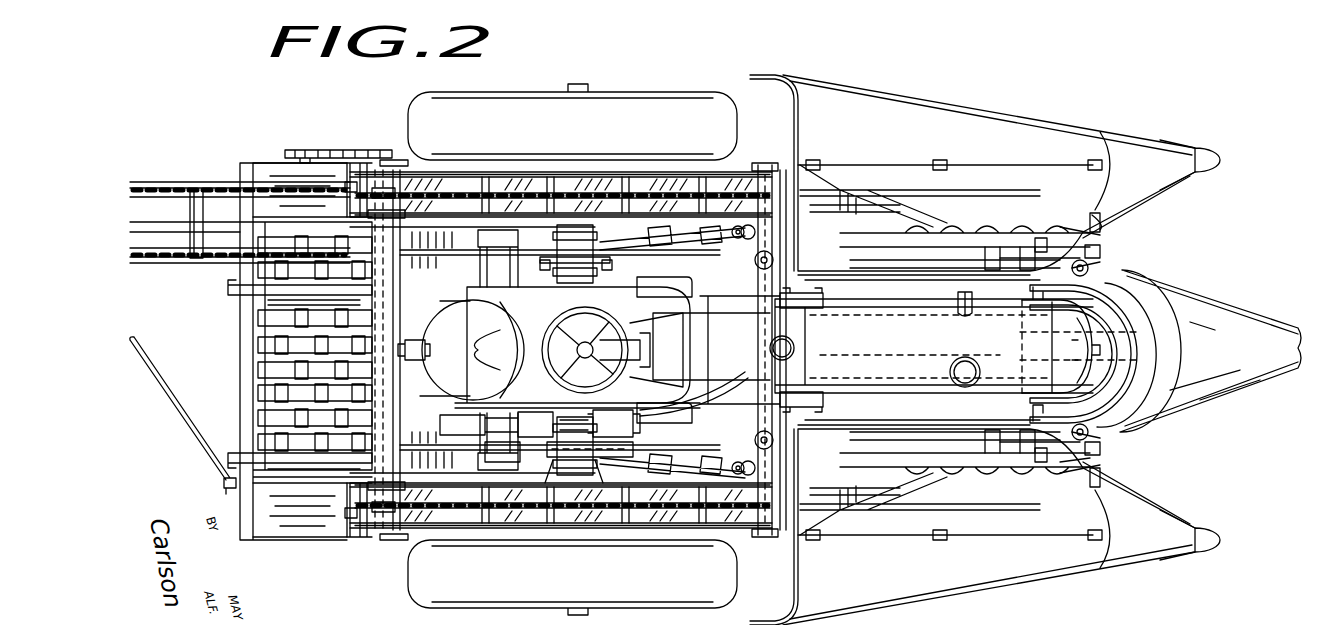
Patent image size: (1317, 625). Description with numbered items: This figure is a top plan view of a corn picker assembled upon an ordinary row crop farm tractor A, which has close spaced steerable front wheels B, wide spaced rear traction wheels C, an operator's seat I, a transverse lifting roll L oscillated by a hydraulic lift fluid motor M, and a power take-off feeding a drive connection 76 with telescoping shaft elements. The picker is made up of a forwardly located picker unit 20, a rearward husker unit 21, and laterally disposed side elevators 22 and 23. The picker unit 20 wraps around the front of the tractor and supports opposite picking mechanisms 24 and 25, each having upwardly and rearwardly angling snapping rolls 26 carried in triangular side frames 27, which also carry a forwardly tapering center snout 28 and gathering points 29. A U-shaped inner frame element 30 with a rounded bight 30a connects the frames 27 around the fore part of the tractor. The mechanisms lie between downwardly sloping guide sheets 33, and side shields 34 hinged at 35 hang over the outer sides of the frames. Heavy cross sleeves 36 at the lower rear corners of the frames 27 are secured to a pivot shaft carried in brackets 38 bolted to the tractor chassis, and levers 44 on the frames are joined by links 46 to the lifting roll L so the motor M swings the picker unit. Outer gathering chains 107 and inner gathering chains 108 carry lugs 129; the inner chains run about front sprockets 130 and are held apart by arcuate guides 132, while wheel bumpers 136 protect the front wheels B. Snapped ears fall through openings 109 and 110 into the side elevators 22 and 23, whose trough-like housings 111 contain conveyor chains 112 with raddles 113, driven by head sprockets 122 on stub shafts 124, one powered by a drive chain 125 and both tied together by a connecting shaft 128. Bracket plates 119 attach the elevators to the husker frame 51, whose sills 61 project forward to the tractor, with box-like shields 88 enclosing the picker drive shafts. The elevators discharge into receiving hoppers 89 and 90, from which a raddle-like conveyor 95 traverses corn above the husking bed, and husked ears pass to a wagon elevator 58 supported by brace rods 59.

The rear traction wheels C is at (546, 92).
The side elevator 22 is at (502, 541).
The side elevator 23 is at (657, 166).
The trough-like housing 111 is at (605, 178).
The raddles 113 is at (525, 195).
The conveyor chains 112 is at (676, 193).
The box-like frame 51 is at (240, 328).
The receiving hopper 90 is at (270, 165).
The receiving hopper 89 is at (320, 525).
The drive chain 125 is at (328, 150).
The stub shafts 124 is at (370, 163).
The bracket plates 119 is at (405, 178).
The head sprockets 122 is at (442, 182).
The wagon elevator 58 is at (163, 255).
The brace rods 59 is at (160, 372).
The raddle-like conveyor 95 is at (276, 357).
The sills 61 is at (432, 252).
The box-like shields 88 is at (436, 240).
The lifting roll L is at (507, 274).
The drive connection 76 is at (414, 329).
The operator's seat I is at (561, 347).
The connecting shaft 128 is at (395, 397).
The hydraulic lift fluid motor M is at (640, 410).
The links 46 is at (615, 252).
The lever 44 is at (703, 250).
The side frames 27 is at (733, 268).
The bracket 38 is at (760, 318).
The cross sleeves 36 is at (763, 283).
The row crop farm tractor A is at (845, 360).
The U-shaped inner frame element 30 is at (928, 414).
The wheel bumpers 136 is at (1012, 312).
The steerable wheels B is at (1018, 358).
The rounded bight 30a is at (1092, 326).
The center snout 28 is at (1232, 305).
The picker unit 20 is at (1097, 126).
The husker unit 21 is at (283, 545).
The side shields 34 is at (950, 105).
The hinges 35 is at (940, 160).
The opening 110 is at (882, 193).
The opening 109 is at (880, 515).
The lugs 129 is at (955, 243).
The guide sheets 33 is at (1020, 187).
The snapping rolls 26 is at (1000, 240).
The arcuate guides 132 is at (1040, 238).
The outer gathering chains 107 is at (1100, 226).
The picking mechanism 25 is at (1100, 236).
The picking mechanism 24 is at (1095, 461).
The inner gathering chains 108 is at (1092, 252).
The front sprockets 130 is at (1100, 264).
The gathering points 29 is at (1168, 150).